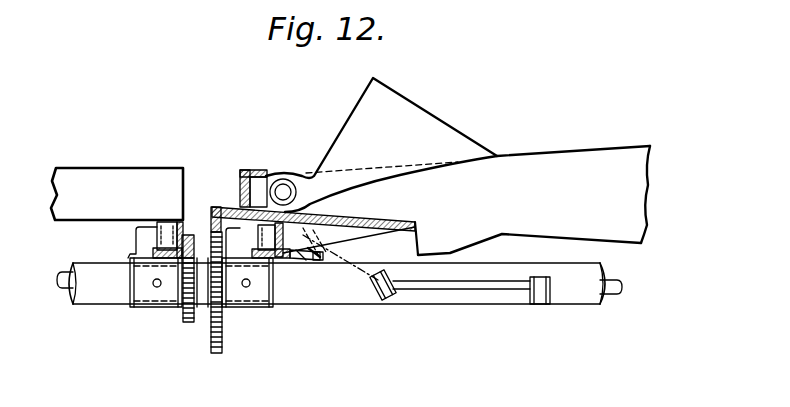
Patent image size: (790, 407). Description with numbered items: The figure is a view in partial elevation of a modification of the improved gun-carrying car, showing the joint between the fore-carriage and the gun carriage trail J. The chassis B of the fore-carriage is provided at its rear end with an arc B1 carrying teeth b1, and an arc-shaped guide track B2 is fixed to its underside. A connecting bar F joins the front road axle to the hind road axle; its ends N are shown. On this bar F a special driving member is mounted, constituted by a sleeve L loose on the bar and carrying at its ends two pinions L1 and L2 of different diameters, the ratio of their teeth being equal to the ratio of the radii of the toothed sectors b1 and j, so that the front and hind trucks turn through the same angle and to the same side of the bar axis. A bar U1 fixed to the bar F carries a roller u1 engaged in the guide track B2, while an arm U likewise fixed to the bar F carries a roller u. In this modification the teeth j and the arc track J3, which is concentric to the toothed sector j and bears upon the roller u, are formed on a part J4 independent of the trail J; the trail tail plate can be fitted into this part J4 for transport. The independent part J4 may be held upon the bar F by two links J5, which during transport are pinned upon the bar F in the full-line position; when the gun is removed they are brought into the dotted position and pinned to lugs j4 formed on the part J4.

The chassis B is at (78, 180).
The arc B1 is at (187, 228).
The arc-shaped guide track B2 is at (164, 222).
The roller u1 is at (163, 226).
The bar U1 is at (143, 240).
The arm U is at (237, 243).
The toothed sector j is at (215, 222).
The roller u is at (261, 228).
The trail J is at (603, 160).
The arc track J3 is at (289, 258).
The independent part J4 is at (358, 226).
The lugs j4 is at (311, 258).
The links J5 is at (462, 290).
The connecting bar F is at (102, 296).
The shaft stub N is at (66, 281).
The teeth b1 is at (182, 246).
The sleeve L is at (203, 297).
The pinion L1 is at (188, 312).
The pinion L2 is at (222, 339).